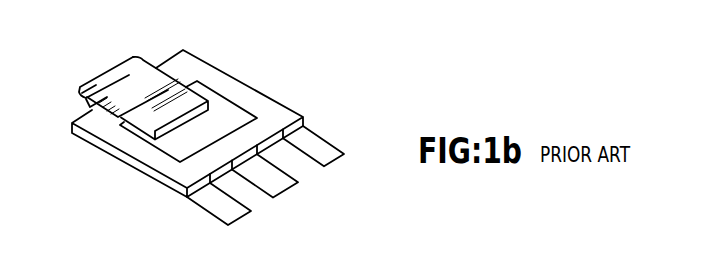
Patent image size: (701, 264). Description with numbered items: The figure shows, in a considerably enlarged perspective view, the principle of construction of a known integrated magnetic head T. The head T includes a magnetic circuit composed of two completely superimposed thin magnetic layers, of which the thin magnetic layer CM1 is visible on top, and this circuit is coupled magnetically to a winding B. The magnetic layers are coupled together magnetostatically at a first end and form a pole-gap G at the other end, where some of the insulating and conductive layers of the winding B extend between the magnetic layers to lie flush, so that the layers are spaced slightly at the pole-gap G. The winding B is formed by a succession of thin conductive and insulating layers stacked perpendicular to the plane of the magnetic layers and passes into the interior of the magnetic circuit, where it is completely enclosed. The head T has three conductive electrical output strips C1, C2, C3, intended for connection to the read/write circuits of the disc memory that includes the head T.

The thin magnetic layer CM1 is at (162, 68).
The integrated magnetic head T is at (92, 74).
The pole-gap G is at (77, 91).
The winding B is at (118, 163).
The conductive electrical output strip C1 is at (326, 145).
The conductive electrical output strip C2 is at (290, 181).
The conductive electrical output strip C3 is at (242, 211).